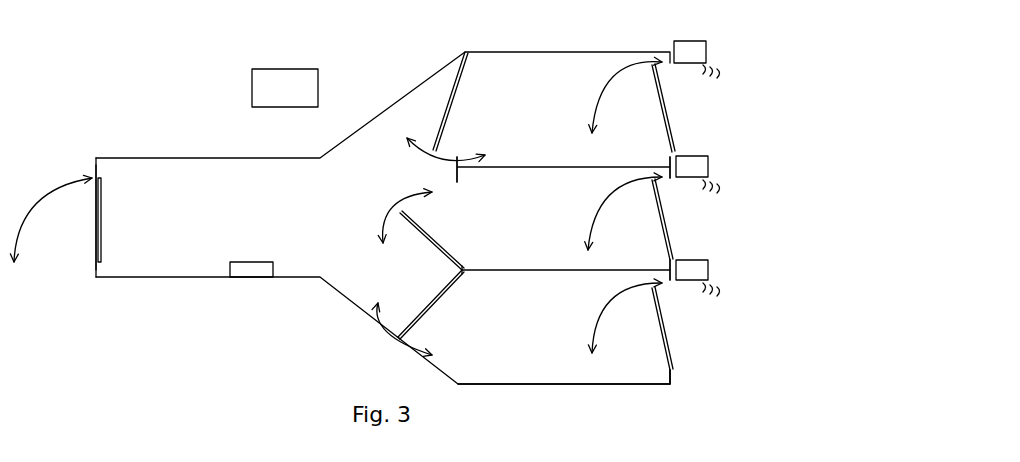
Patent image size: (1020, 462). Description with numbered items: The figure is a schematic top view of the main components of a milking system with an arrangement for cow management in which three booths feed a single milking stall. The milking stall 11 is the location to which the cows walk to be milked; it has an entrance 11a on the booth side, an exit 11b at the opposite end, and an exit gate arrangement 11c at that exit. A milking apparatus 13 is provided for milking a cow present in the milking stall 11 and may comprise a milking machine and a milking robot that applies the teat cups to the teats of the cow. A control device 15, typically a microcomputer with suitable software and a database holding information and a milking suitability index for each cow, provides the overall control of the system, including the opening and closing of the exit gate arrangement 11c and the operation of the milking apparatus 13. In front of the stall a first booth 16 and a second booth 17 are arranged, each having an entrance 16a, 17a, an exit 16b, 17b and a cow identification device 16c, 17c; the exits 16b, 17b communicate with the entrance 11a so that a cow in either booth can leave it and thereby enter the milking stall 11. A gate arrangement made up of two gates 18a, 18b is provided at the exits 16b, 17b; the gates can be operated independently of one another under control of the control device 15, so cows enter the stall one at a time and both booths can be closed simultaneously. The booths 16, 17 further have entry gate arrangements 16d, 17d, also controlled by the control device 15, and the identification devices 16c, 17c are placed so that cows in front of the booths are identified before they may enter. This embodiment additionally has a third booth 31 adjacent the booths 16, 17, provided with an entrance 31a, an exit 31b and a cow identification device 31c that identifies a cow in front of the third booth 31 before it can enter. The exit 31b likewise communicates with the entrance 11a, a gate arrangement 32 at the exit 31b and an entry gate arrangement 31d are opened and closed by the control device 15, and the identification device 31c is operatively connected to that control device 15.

The milking stall 11 is at (159, 278).
The entrance 11a is at (265, 217).
The exit 11b is at (122, 217).
The exit gate arrangement 11c is at (96, 233).
The milking apparatus 13 is at (247, 273).
The control device 15 is at (318, 77).
The third booth 31 is at (569, 162).
The entrance 31a is at (688, 130).
The exit 31b is at (474, 150).
The cow identification device 31c is at (706, 50).
The entry gate arrangement 31d is at (673, 125).
The gate arrangement 32 is at (460, 83).
The second booth 17 is at (564, 264).
The entrance 17a is at (687, 240).
The exit 17b is at (483, 246).
The cow identification device 17c is at (708, 165).
The entry gate arrangement 17d is at (672, 242).
The gate 18a is at (442, 293).
The gate 18b is at (432, 242).
The first booth 16 is at (564, 377).
The entrance 16a is at (690, 343).
The exit 16b is at (434, 322).
The cow identification device 16c is at (708, 270).
The entry gate arrangement 16d is at (672, 352).